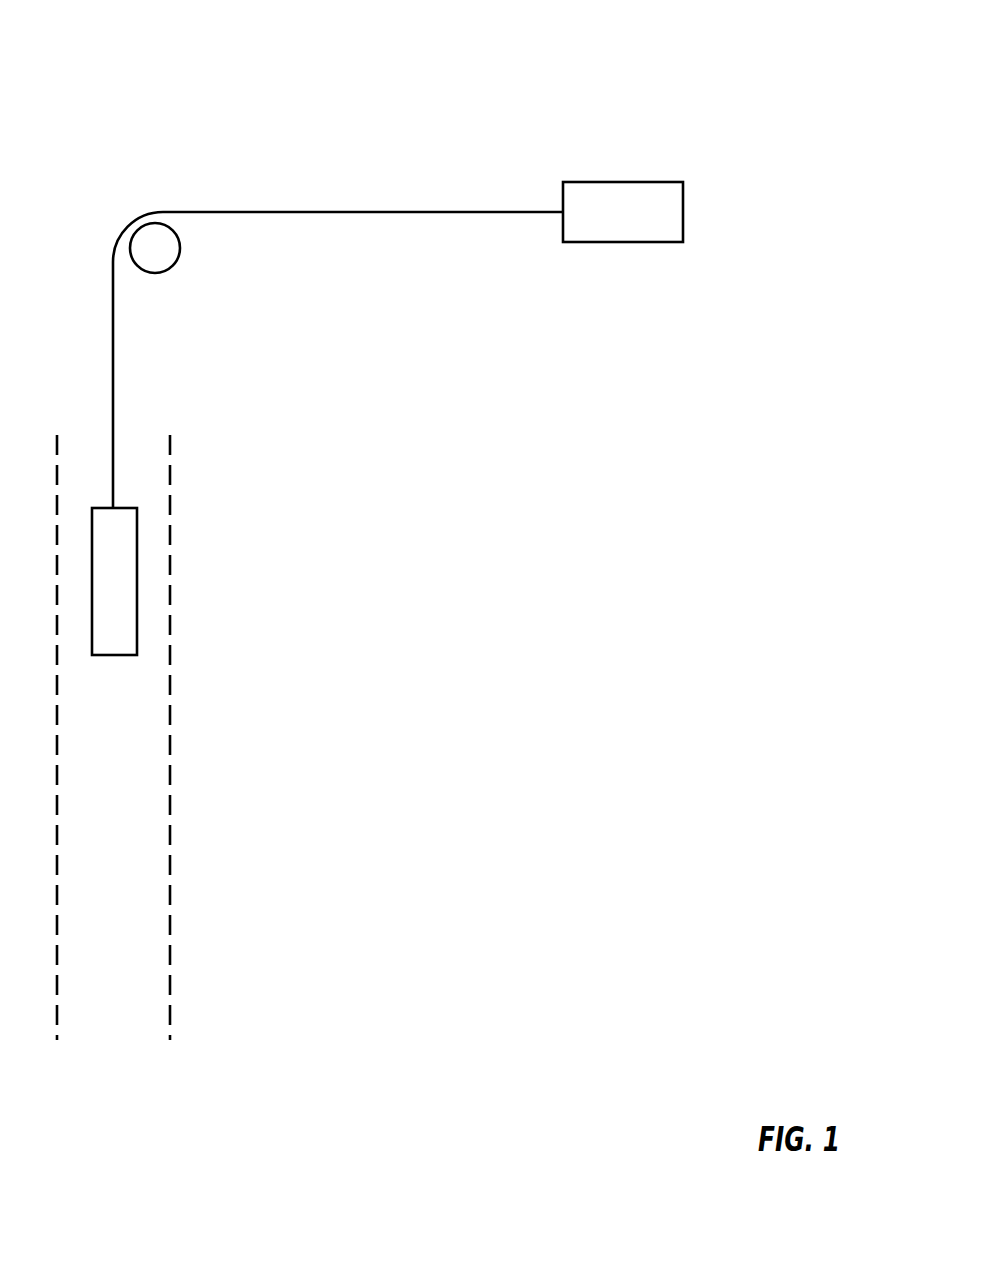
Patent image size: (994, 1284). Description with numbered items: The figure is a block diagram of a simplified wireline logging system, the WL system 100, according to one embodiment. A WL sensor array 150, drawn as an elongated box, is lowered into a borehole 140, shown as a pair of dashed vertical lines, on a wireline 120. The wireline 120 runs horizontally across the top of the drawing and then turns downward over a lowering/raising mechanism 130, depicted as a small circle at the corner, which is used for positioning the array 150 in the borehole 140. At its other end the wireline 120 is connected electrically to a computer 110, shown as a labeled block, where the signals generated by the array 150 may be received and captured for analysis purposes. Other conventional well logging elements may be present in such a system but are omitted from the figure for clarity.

The WL system 100 is at (472, 72).
The computer 110 is at (623, 182).
The wireline 120 is at (302, 212).
The lowering/raising mechanism 130 is at (177, 263).
The borehole 140 is at (170, 755).
The WL sensor array 150 is at (137, 580).